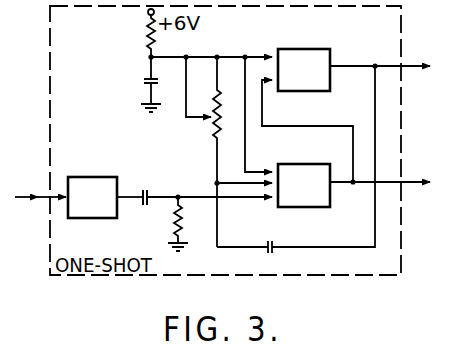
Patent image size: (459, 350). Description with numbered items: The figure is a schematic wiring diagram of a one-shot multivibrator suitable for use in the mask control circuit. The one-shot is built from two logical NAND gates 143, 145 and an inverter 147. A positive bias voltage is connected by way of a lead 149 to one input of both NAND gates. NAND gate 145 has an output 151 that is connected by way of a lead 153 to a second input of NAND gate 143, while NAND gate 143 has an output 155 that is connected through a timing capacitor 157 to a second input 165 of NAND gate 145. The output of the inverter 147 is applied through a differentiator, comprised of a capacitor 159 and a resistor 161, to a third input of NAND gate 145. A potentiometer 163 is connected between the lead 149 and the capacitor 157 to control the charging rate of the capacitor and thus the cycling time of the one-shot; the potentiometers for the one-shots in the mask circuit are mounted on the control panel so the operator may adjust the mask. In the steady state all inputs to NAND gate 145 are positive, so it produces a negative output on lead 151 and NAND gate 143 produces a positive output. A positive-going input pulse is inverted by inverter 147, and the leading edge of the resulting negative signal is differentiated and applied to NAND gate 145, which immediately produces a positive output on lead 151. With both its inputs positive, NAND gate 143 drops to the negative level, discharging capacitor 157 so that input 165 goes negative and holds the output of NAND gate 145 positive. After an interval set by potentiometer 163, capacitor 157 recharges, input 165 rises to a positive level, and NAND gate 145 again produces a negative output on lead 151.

The NAND gate 143 is at (314, 49).
The NAND gate 145 is at (303, 164).
The inverter 147 is at (93, 177).
The lead 149 is at (230, 56).
The output 151 is at (345, 183).
The lead 153 is at (263, 113).
The output 155 is at (357, 67).
The timing capacitor 157 is at (272, 242).
The capacitor 159 is at (144, 189).
The resistor 161 is at (175, 229).
The potentiometer 163 is at (213, 124).
The input 165 is at (240, 182).